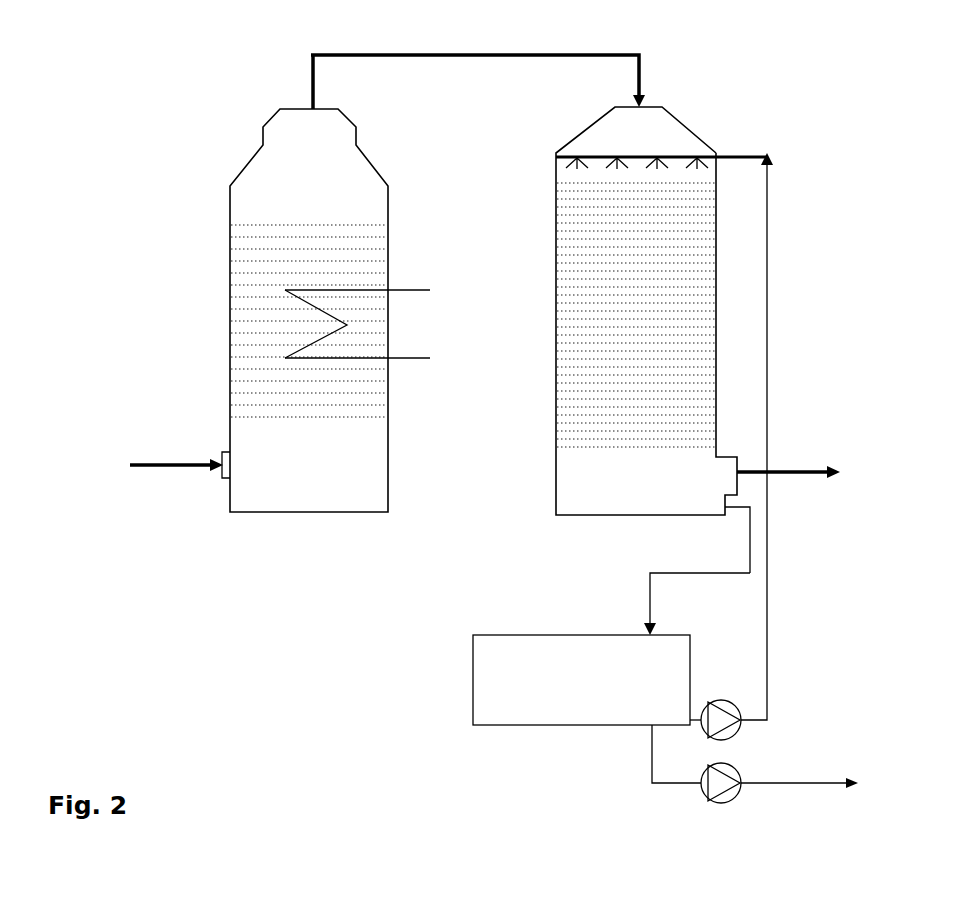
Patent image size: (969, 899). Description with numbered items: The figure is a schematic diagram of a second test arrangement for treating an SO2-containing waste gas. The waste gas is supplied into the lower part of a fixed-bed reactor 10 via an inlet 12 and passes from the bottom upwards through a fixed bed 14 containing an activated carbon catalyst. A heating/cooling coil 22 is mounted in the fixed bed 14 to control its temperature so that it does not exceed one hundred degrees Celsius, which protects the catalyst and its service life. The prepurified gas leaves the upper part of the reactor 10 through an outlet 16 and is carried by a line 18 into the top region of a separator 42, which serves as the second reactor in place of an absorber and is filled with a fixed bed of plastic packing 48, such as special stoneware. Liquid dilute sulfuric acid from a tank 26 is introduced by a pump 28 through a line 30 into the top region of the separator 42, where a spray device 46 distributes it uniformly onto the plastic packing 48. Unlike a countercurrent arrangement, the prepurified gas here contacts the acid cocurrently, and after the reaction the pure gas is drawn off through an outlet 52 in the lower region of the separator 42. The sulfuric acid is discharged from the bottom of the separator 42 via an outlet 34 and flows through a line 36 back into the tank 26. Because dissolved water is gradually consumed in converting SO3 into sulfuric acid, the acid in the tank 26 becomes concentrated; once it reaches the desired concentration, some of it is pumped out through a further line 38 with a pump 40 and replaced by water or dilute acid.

The fixed-bed reactor 10 is at (138, 174).
The inlet 12 is at (225, 478).
The fixed bed 14 is at (228, 282).
The outlet 16 is at (318, 106).
The line 18 is at (485, 55).
The heating/cooling coil 22 is at (400, 290).
The tank 26 is at (492, 686).
The pump 28 is at (738, 730).
The line 30 is at (770, 382).
The outlet 34 is at (718, 517).
The line 36 is at (704, 574).
The further line 38 is at (652, 755).
The pump 40 is at (727, 798).
The separator 42 is at (667, 88).
The spray device 46 is at (675, 157).
The plastic packing 48 is at (578, 345).
The outlet 52 is at (718, 460).